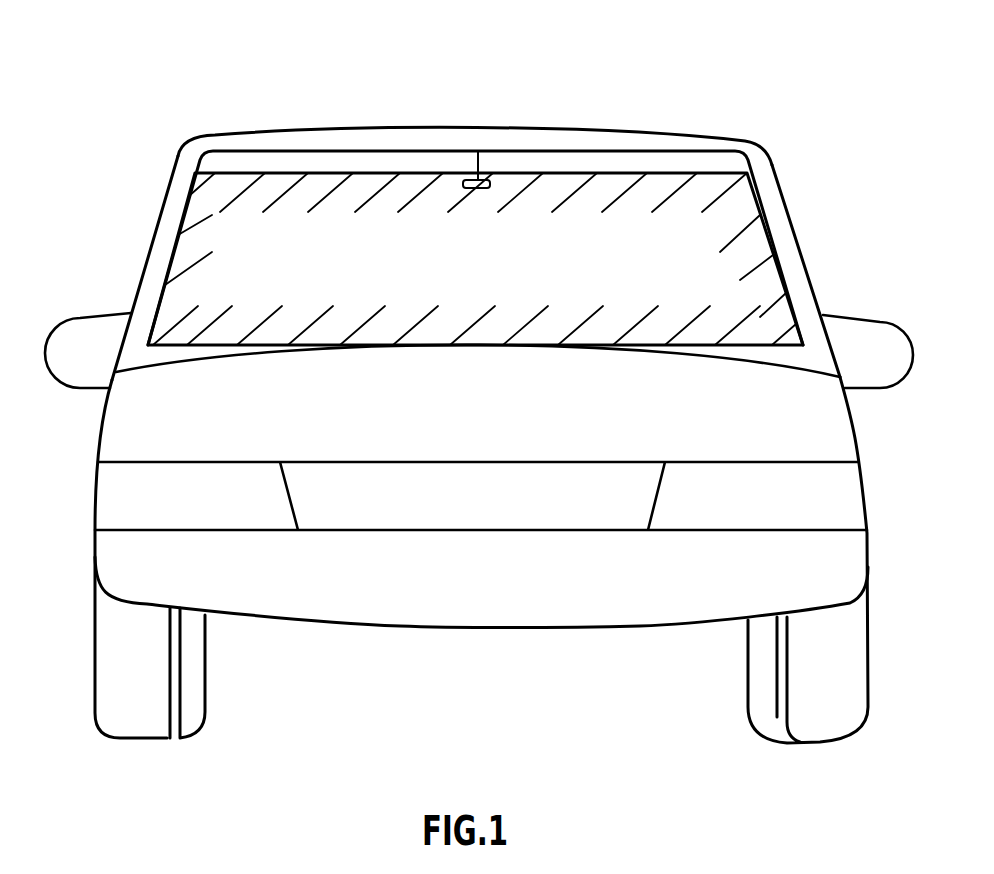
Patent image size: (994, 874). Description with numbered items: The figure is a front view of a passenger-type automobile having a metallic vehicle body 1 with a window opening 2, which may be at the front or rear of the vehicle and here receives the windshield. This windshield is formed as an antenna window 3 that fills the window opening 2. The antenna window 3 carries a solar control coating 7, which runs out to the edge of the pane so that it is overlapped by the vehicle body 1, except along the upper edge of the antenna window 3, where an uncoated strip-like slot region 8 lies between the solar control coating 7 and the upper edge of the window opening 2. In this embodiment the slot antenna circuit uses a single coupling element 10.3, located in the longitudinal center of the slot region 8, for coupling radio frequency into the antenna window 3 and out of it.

The vehicle body 1 is at (817, 423).
The window opening 2 is at (787, 273).
The antenna window 3 is at (489, 274).
The solar control coating 7 is at (740, 205).
The slot region 8 is at (713, 160).
The coupling element 10.3 is at (482, 183).